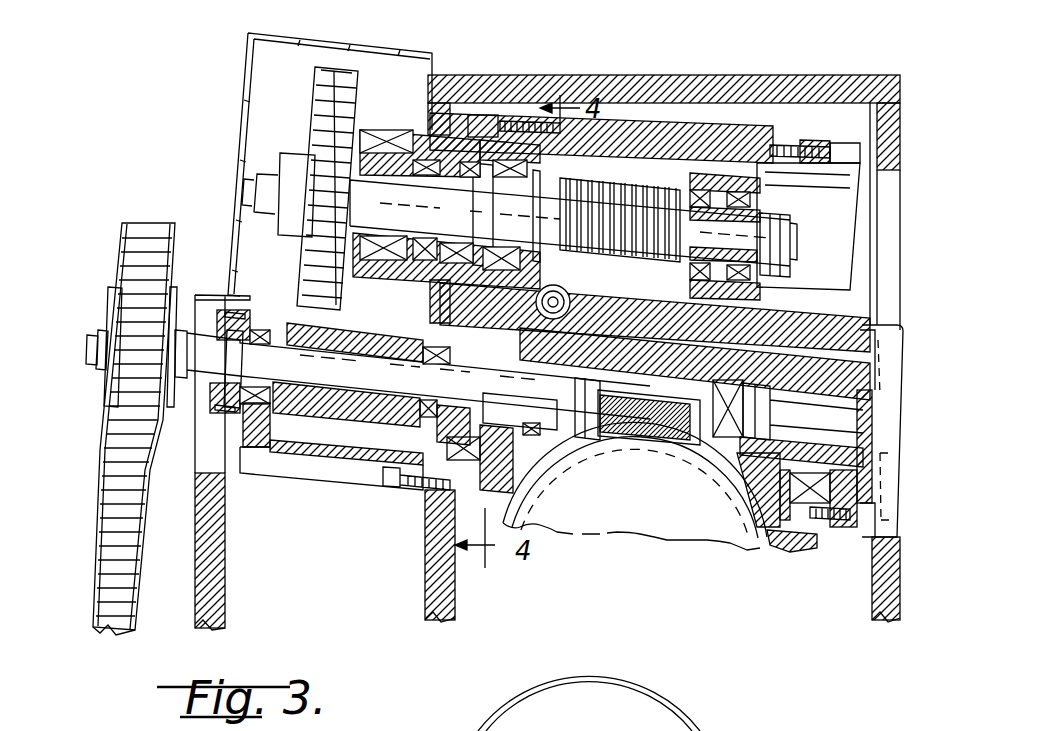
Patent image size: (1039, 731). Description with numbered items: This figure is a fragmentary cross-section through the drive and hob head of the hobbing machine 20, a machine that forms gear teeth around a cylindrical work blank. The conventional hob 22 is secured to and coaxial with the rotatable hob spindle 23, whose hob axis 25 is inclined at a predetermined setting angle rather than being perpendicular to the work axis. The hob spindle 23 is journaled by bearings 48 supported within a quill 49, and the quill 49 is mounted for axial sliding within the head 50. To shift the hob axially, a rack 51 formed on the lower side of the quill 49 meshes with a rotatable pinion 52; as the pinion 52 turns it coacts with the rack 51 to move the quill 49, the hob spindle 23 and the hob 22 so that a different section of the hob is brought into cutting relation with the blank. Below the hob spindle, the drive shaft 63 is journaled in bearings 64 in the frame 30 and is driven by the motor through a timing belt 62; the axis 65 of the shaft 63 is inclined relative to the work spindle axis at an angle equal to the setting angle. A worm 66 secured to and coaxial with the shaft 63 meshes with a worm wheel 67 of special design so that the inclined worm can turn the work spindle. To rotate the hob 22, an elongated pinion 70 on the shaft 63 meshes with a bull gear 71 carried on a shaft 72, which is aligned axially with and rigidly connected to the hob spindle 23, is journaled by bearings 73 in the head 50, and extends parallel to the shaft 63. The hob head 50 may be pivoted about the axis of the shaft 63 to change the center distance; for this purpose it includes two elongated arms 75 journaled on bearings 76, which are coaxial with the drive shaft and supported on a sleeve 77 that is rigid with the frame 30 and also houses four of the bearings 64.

The hobbing machine 20 is at (690, 63).
The hob 22 is at (600, 170).
The hob spindle 23 is at (712, 215).
The hob axis 25 is at (770, 222).
The frame 30 is at (410, 553).
The bearings 48 is at (495, 182).
The quill 49 is at (625, 165).
The head 50 is at (744, 120).
The rack 51 is at (500, 300).
The pinion 52 is at (570, 298).
The timing belt 62 is at (100, 530).
The shaft 63 is at (295, 420).
The bearings 64 is at (265, 320).
The axis of the shaft 65 is at (590, 398).
The worm 66 is at (640, 418).
The worm wheel 67 is at (790, 548).
The elongated pinion 70 is at (345, 430).
The bull gear 71 is at (318, 143).
The shaft 72 is at (378, 148).
The bearings 73 is at (450, 182).
The arms 75 is at (505, 118).
The bearings 76 is at (880, 348).
The sleeve 77 is at (870, 308).